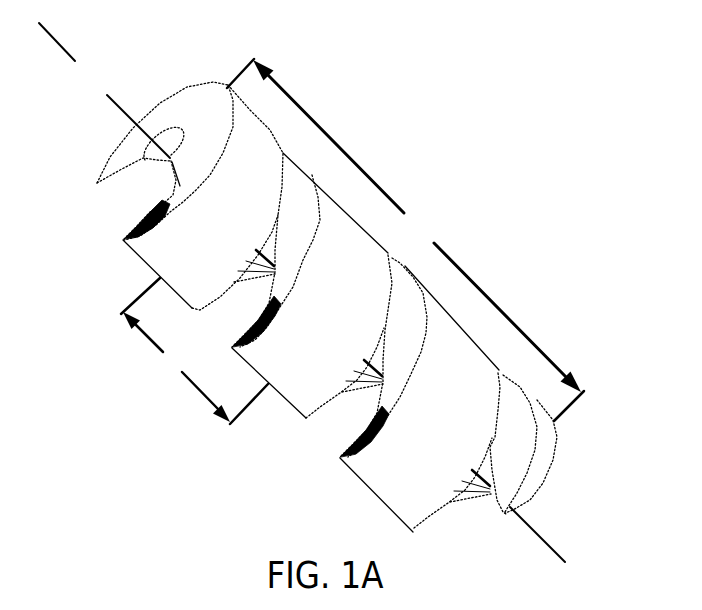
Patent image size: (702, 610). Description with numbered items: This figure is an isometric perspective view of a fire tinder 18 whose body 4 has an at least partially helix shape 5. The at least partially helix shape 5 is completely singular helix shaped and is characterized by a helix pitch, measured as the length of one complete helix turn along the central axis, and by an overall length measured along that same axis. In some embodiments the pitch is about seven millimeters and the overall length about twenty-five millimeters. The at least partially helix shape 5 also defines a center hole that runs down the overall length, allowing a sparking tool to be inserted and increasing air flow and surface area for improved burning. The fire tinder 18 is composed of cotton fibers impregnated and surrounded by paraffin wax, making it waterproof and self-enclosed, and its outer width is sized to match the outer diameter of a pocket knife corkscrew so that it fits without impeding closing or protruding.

The fire tinder 18 is at (560, 139).
The at least partially helix shape 5 is at (457, 183).
The body 4 is at (496, 209).